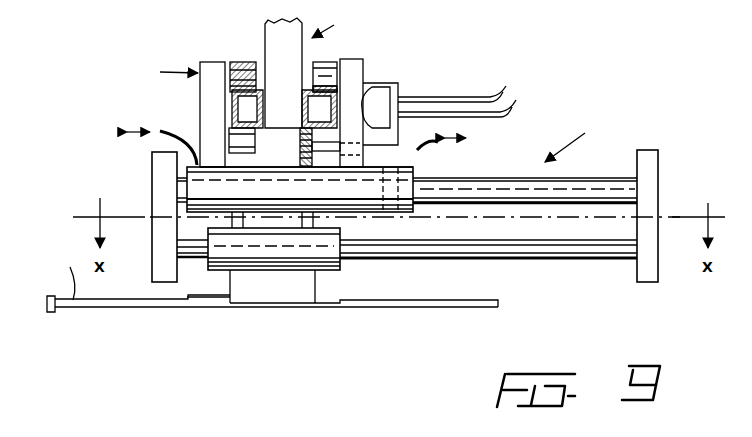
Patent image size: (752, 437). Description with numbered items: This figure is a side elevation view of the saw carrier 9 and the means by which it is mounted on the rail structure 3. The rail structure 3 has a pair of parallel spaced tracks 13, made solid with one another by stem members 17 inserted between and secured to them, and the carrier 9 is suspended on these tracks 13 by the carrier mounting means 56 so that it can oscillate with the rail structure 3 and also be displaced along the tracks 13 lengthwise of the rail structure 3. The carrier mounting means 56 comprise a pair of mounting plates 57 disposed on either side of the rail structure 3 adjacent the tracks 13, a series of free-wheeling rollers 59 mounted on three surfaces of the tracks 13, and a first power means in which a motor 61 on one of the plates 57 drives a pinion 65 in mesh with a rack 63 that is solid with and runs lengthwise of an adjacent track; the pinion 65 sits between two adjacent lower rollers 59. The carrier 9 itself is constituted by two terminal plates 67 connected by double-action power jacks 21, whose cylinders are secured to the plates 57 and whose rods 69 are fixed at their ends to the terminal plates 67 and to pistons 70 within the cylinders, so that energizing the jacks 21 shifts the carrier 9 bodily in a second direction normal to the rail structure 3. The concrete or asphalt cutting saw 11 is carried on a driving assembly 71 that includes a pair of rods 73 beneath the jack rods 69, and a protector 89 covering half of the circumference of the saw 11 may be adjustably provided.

The rail structure 3 is at (325, 20).
The carrier 9 is at (565, 141).
The saw 11 is at (450, 303).
The tracks 13 is at (235, 95).
The stem members 17 is at (275, 32).
The double-action power jack 21 is at (418, 172).
The carrier mounting means 56 is at (164, 68).
The mounting plates 57 is at (218, 65).
The rollers 59 is at (245, 60).
The motor 61 is at (380, 98).
The rack 63 is at (298, 136).
The pinion 65 is at (298, 150).
The terminal plates 67 is at (160, 168).
The rods 69 is at (591, 178).
The pistons 70 is at (397, 215).
The driving assembly 71 is at (322, 288).
The rods 73 is at (578, 248).
The protector 89 is at (56, 276).